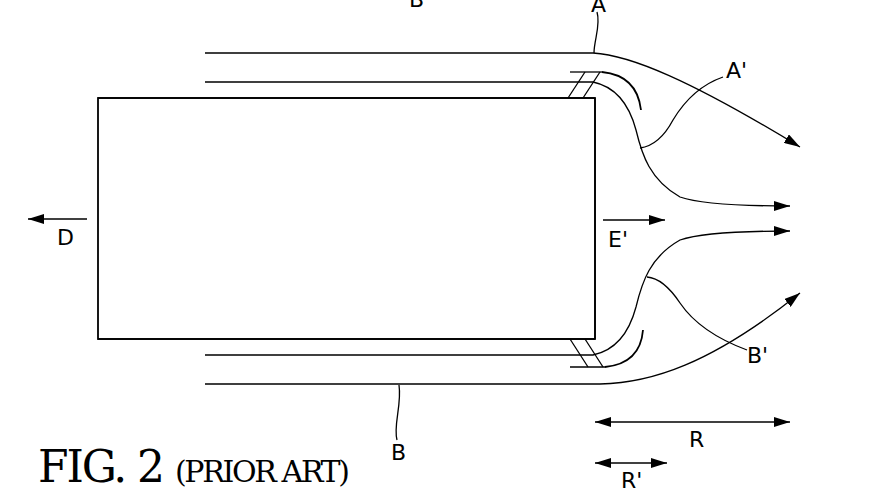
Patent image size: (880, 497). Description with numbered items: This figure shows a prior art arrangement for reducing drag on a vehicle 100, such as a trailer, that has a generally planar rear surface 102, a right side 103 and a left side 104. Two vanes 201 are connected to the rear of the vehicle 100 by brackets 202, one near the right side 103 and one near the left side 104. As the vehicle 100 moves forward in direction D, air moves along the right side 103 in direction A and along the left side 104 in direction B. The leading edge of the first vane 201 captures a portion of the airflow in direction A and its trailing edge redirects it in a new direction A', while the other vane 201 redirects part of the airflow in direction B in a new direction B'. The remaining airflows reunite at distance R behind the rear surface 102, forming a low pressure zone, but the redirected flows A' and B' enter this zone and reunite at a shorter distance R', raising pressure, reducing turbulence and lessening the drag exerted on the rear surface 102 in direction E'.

The vehicle 100 is at (97, 171).
The rear surface 102 is at (596, 170).
The right side 103 is at (138, 98).
The left side 104 is at (130, 339).
The vane 201 is at (640, 88).
The bracket 202 is at (572, 93).